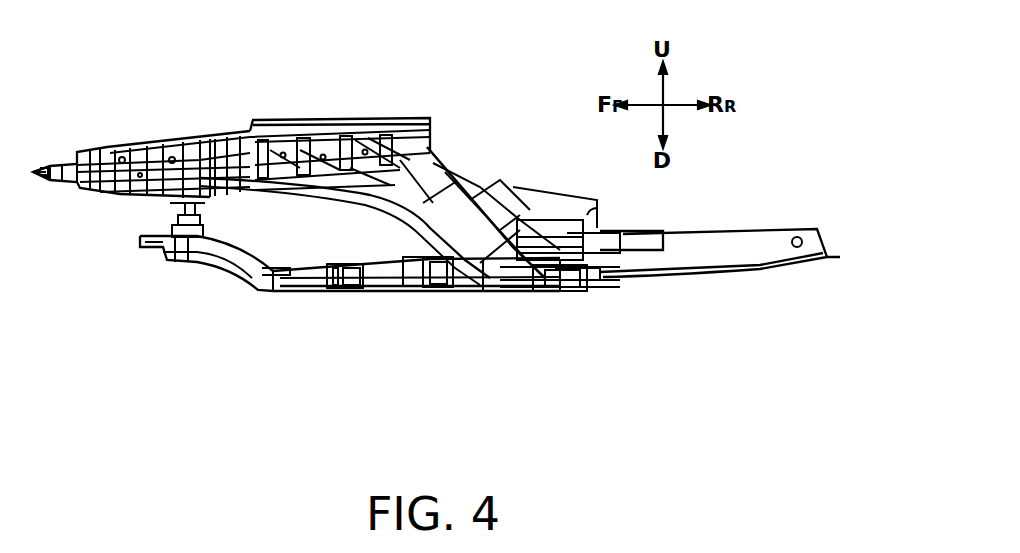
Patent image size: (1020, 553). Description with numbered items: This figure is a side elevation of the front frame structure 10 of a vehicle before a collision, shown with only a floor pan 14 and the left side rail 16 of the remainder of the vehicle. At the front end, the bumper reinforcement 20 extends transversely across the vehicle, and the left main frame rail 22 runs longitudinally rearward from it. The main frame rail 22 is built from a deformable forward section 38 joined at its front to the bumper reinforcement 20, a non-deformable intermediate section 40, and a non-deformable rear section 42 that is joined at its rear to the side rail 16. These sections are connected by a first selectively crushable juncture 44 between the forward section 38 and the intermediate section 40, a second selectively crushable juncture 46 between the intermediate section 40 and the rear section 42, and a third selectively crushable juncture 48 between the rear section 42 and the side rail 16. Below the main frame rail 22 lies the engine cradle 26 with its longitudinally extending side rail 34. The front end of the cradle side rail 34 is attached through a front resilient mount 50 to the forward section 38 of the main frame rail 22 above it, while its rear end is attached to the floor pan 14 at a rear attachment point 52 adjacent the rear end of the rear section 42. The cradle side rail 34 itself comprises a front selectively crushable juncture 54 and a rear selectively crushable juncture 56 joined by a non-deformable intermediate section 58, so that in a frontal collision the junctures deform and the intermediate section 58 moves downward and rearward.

The front frame structure 10 is at (385, 80).
The floor pan 14 is at (493, 180).
The left side rail 16 is at (707, 250).
The bumper reinforcement 20 is at (55, 178).
The left main frame rail 22 is at (278, 186).
The engine cradle 26 is at (265, 270).
The left engine cradle side rail 34 is at (312, 272).
The deformable forward section 38 is at (208, 145).
The non-deformable intermediate section 40 is at (343, 120).
The non-deformable rear section 42 is at (492, 200).
The first selectively crushable juncture 44 is at (234, 138).
The second selectively crushable juncture 46 is at (398, 160).
The third selectively crushable juncture 48 is at (555, 232).
The front resilient mount 50 is at (196, 209).
The rear attachment point 52 is at (560, 285).
The front selectively crushable juncture 54 is at (250, 288).
The rear selectively crushable juncture 56 is at (553, 293).
The non-deformable intermediate section 58 is at (482, 293).